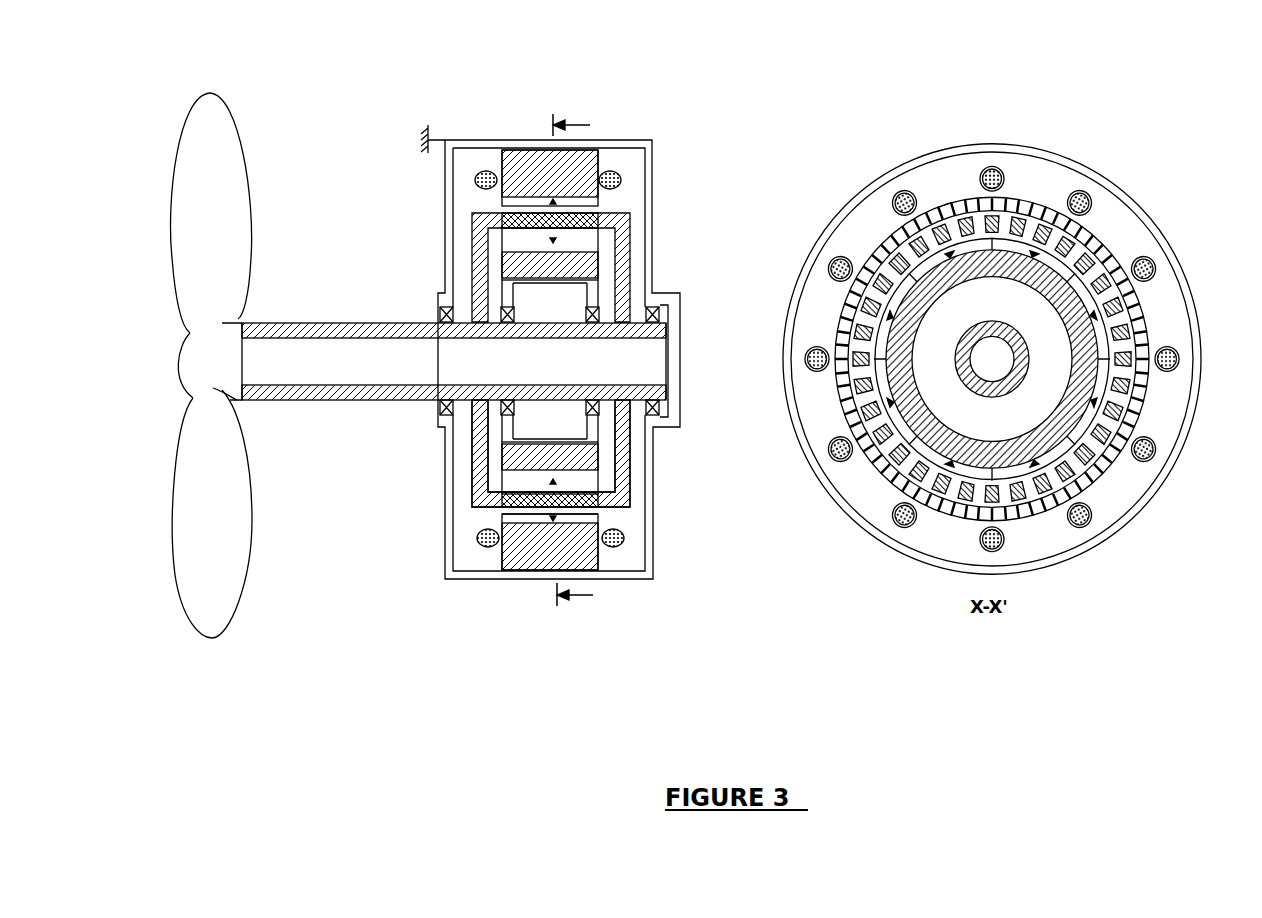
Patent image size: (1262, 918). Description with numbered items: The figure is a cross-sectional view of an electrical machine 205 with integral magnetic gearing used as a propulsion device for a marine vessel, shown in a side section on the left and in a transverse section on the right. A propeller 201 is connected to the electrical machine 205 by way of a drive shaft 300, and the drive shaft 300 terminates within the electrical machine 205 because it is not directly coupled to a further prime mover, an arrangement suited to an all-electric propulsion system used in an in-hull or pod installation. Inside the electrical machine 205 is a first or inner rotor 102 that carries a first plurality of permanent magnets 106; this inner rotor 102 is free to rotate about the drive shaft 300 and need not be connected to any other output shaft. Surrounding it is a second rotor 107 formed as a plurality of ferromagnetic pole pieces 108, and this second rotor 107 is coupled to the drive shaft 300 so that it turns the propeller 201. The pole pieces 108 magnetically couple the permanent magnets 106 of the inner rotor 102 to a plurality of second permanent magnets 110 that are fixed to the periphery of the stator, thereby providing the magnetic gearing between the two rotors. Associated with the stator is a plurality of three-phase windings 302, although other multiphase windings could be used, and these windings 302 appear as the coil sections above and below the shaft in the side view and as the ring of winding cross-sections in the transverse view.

The propeller 201 is at (207, 157).
The drive shaft 300 is at (313, 392).
The electrical machine 205 is at (650, 127).
The 3-phase windings 302 is at (486, 176).
The second rotor 107 is at (473, 465).
The inner rotor 102 is at (598, 415).
The permanent magnets 106 is at (573, 475).
The ferromagnetic pole pieces 108 is at (517, 497).
The second permanent magnets 110 is at (530, 517).